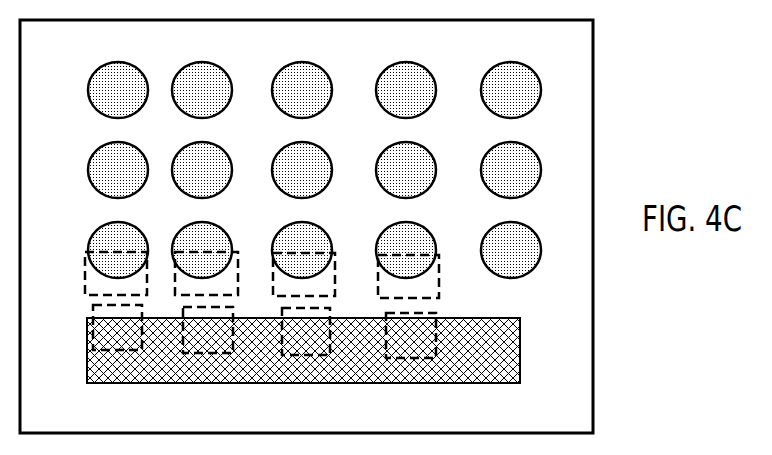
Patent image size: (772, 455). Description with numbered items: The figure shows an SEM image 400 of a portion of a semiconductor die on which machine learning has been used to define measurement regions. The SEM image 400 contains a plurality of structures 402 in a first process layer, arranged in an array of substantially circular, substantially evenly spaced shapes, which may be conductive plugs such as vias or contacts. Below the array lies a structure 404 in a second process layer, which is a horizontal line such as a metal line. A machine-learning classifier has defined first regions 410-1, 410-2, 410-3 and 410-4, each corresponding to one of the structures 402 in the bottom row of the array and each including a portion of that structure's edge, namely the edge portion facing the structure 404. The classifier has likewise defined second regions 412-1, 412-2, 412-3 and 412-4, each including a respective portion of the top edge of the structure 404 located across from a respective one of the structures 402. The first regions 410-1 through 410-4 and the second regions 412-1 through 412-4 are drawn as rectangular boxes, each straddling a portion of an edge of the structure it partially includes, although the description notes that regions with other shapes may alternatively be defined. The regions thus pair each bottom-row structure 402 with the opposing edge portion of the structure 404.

The SEM image 400 is at (585, 51).
The structures 402 is at (129, 98).
The structure 404 is at (512, 360).
The first region 410-1 is at (85, 268).
The first region 410-2 is at (238, 268).
The first region 410-3 is at (335, 268).
The first region 410-4 is at (440, 268).
The second region 412-1 is at (93, 305).
The second region 412-2 is at (198, 354).
The second region 412-3 is at (290, 356).
The second region 412-4 is at (393, 359).